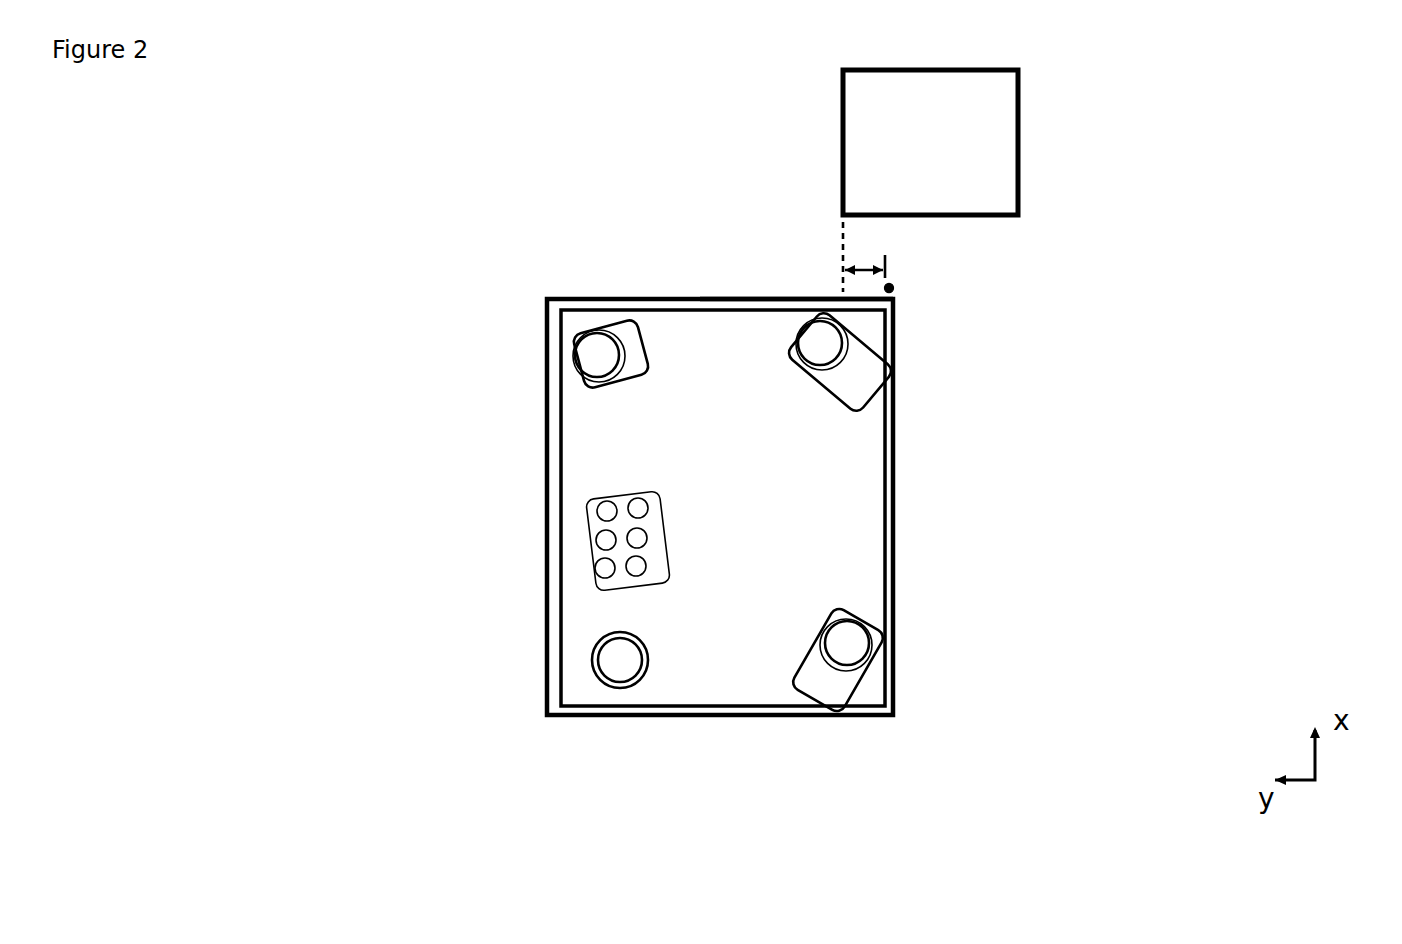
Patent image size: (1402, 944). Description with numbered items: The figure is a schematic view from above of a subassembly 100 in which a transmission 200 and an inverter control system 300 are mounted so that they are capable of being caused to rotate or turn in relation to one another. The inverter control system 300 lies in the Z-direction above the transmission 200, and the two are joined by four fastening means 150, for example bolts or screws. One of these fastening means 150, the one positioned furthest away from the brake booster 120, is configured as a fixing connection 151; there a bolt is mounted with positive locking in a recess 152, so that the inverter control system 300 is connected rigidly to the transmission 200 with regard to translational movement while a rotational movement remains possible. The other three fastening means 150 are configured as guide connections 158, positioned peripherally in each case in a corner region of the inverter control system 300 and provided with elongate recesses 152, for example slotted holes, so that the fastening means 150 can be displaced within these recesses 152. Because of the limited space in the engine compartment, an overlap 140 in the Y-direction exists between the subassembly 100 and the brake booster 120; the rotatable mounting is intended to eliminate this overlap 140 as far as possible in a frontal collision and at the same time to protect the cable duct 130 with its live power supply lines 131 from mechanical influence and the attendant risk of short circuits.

The subassembly 100 is at (660, 512).
The brake booster 120 is at (1035, 142).
The cable duct 130 is at (536, 569).
The power supply lines 131 is at (512, 538).
The overlap 140 is at (975, 257).
The fastening means 150 is at (660, 541).
The fixing connection 151 is at (535, 727).
The recess 152 is at (833, 517).
The guide connection 158 is at (779, 275).
The transmission 200 is at (740, 574).
The inverter control system 300 is at (723, 602).